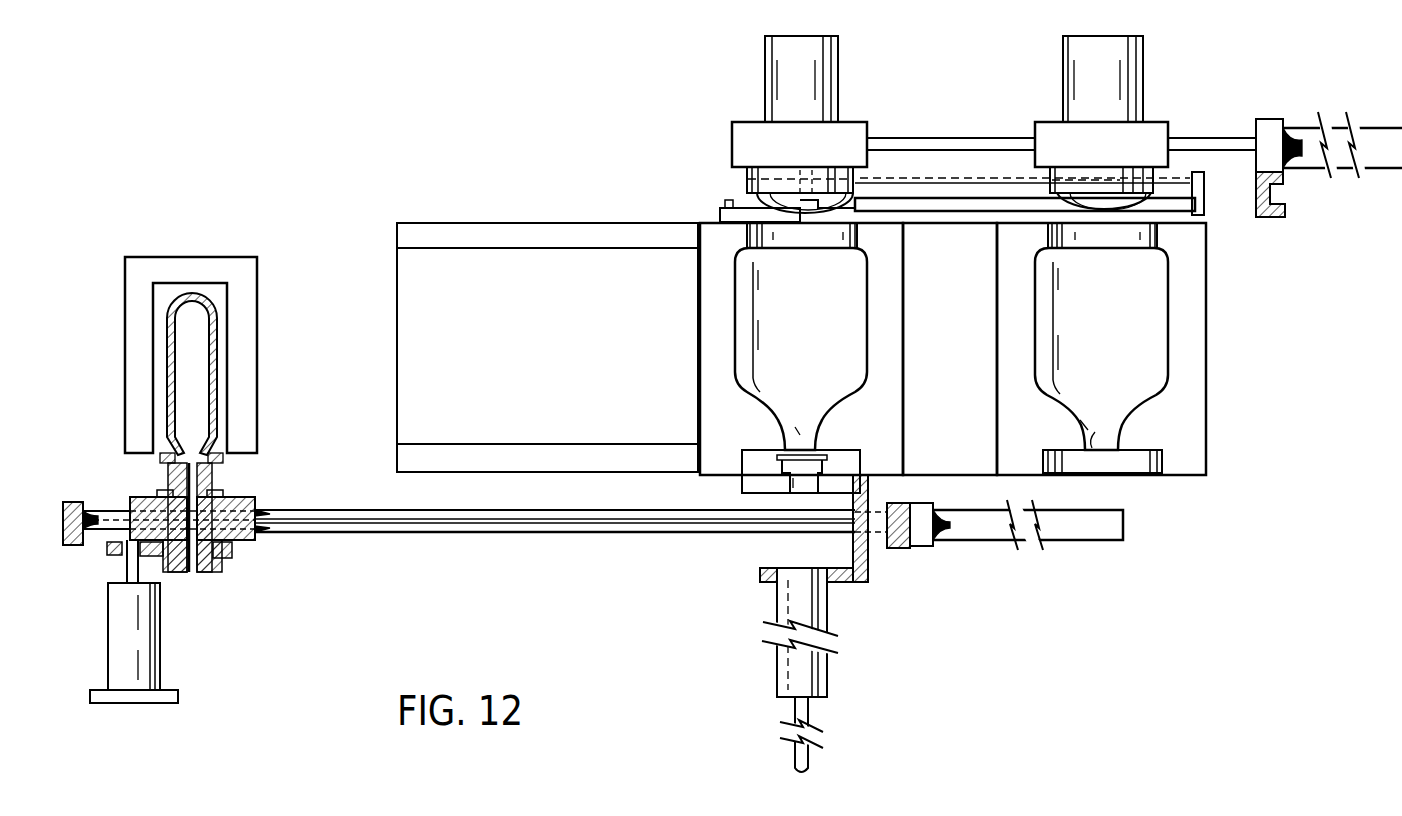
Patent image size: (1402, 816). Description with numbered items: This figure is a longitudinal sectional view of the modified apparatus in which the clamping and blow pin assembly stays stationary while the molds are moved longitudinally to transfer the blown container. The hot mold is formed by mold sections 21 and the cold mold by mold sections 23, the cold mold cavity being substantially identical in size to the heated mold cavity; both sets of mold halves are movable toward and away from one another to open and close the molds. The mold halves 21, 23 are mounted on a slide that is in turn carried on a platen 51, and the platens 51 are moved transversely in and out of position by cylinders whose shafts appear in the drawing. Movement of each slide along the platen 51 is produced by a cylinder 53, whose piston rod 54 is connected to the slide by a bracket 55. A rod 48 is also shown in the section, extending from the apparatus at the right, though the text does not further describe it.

The mold section 21 is at (718, 240).
The mold section 23 is at (1183, 256).
The rod 48 is at (1305, 150).
The platen 51 is at (466, 223).
The cylinder 53 is at (948, 192).
The piston rod 54 is at (810, 193).
The bracket 55 is at (783, 178).